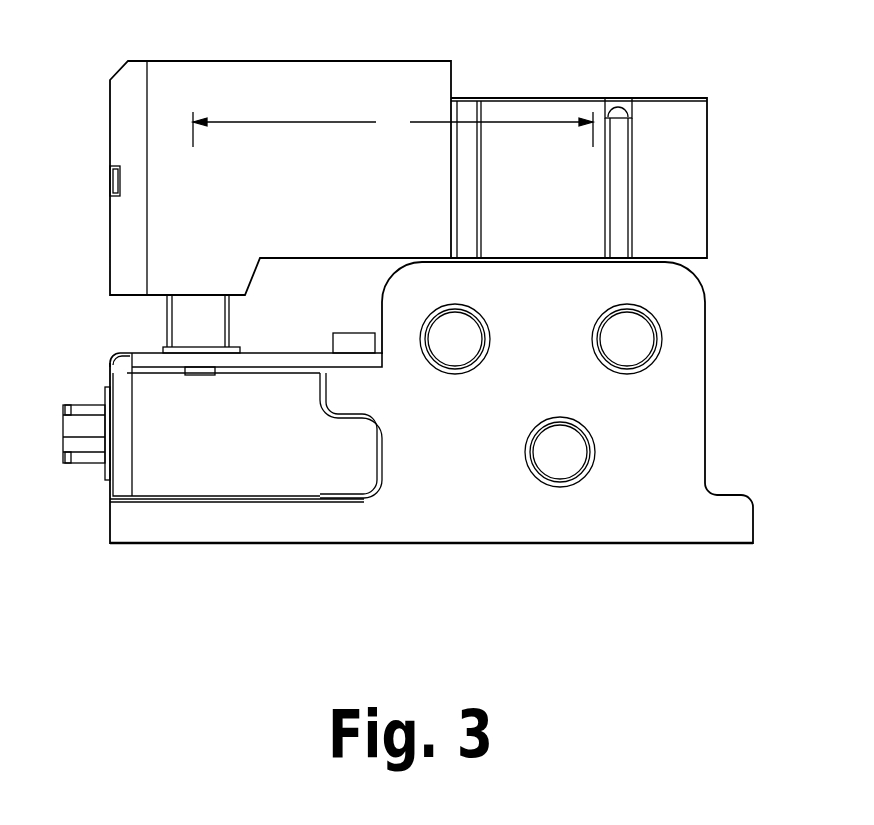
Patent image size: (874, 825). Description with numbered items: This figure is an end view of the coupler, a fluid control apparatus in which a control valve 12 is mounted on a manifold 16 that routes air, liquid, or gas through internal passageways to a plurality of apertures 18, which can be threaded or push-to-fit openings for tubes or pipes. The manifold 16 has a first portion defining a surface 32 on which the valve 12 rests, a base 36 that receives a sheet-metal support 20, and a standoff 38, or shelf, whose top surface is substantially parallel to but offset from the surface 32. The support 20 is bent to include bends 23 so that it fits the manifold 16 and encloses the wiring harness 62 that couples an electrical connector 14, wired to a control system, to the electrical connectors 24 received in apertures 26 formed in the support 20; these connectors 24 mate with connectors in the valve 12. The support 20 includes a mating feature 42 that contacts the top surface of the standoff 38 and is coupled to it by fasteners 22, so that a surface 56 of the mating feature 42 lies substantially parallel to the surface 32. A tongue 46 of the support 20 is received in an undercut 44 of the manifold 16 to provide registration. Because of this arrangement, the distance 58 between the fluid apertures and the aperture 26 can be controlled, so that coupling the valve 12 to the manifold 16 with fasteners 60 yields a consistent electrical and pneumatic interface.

The control valve 12 is at (348, 72).
The electrical connector 14 is at (80, 408).
The manifold 16 is at (688, 430).
The apertures 18 is at (560, 453).
The support 20 is at (147, 468).
The fasteners 22 is at (357, 340).
The bends 23 is at (118, 355).
The electrical connectors 24 is at (167, 348).
The apertures 26 is at (242, 348).
The surface 32 is at (553, 258).
The base 36 is at (218, 528).
The standoff 38 is at (345, 396).
The mating feature 42 is at (345, 358).
The undercut 44 is at (382, 457).
The tongue 46 is at (340, 458).
The surface 56 is at (310, 350).
The distance 58 is at (393, 126).
The fasteners 60 is at (618, 108).
The wiring harness 62 is at (190, 375).